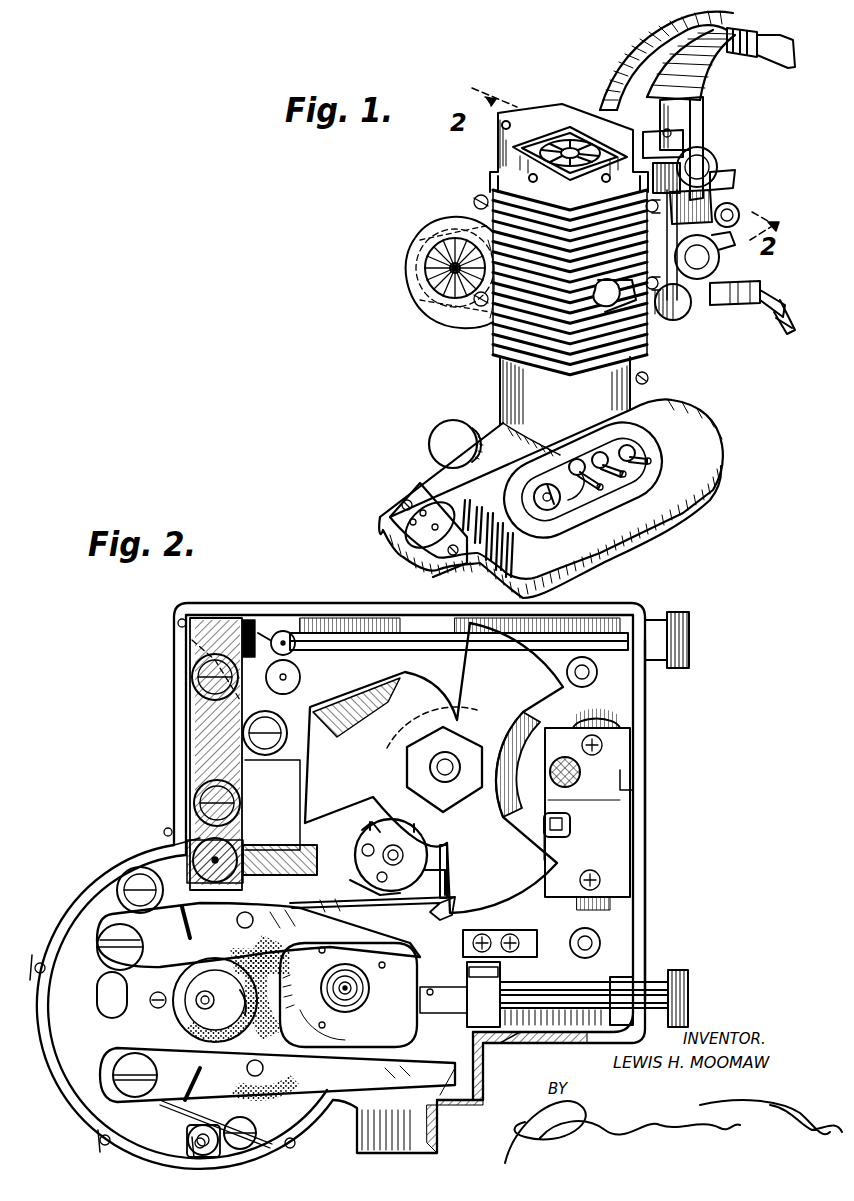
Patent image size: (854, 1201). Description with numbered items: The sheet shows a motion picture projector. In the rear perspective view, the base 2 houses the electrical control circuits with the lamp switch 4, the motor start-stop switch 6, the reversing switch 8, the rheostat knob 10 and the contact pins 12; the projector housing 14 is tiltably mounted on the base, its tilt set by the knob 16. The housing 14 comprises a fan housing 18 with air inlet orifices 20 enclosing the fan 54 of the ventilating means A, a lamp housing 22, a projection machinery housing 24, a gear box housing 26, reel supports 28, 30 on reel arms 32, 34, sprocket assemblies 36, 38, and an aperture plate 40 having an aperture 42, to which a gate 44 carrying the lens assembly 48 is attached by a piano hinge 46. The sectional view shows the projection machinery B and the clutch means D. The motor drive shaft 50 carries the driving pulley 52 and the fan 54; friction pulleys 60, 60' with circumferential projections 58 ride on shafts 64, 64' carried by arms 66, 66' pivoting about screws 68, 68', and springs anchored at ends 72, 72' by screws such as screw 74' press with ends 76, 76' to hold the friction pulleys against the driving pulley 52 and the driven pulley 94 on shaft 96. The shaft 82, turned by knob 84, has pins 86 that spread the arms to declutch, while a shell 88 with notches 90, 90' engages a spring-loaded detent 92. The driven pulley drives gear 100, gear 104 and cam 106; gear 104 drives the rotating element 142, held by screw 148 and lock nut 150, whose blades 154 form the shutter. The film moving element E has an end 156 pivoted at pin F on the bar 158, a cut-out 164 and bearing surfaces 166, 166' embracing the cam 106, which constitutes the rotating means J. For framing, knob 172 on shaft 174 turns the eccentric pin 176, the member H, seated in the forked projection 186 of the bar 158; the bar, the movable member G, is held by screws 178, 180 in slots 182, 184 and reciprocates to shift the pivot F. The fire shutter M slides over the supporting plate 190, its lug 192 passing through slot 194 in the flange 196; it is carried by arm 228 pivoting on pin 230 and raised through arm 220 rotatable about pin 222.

In FIG. 1, the base 2 is at (690, 487).
In FIG. 1, the switch 4 is at (626, 476).
In FIG. 1, the switch 6 is at (601, 490).
In FIG. 1, the switch 8 is at (651, 461).
In FIG. 1, the knob 10 is at (583, 510).
In FIG. 1, the contact pins 12 is at (436, 528).
In FIG. 1, the projector housing 14 is at (480, 176).
In FIG. 1, the knob 16 is at (429, 445).
In FIG. 1, the fan housing 18 is at (420, 278).
In FIG. 1, the air inlet orifices 20 is at (462, 292).
In FIG. 1, the lamp housing 22 is at (632, 335).
In FIG. 1, the projection machinery housing 24 is at (545, 120).
In FIG. 2, the projection machinery housing 24 is at (638, 716).
In FIG. 1, the gear box housing 26 is at (695, 115).
In FIG. 1, the reel support 28 is at (750, 312).
In FIG. 1, the reel support 30 is at (763, 43).
In FIG. 1, the reel arm 32 is at (702, 308).
In FIG. 1, the reel arm 34 is at (705, 54).
In FIG. 1, the sprocket assembly 36 is at (707, 153).
In FIG. 1, the sprocket assembly 38 is at (719, 258).
In FIG. 2, the aperture plate 40 is at (560, 838).
In FIG. 2, the aperture 42 is at (560, 823).
In FIG. 1, the gate 44 is at (657, 130).
In FIG. 1, the piano hinge 46 is at (672, 213).
In FIG. 1, the lens assembly 48 is at (715, 197).
In FIG. 2, the drive shaft 50 is at (217, 1004).
In FIG. 2, the driving pulley 52 is at (177, 1000).
In FIG. 1, the ventilating fan 54 is at (440, 225).
In FIG. 2, the circumferential projections 58 is at (255, 1000).
In FIG. 2, the friction pulley 60 is at (258, 932).
In FIG. 2, the friction pulley 60' is at (277, 1075).
In FIG. 2, the shaft 64 is at (262, 922).
In FIG. 2, the shaft 64' is at (273, 1067).
In FIG. 2, the arm 66 is at (306, 987).
In FIG. 2, the arm 66' is at (332, 1027).
In FIG. 2, the screw 68 is at (105, 944).
In FIG. 2, the screw 68' is at (120, 1066).
In FIG. 2, the spring end 72 is at (123, 893).
In FIG. 2, the spring end 72' is at (210, 1129).
In FIG. 2, the screw 74' is at (259, 1143).
In FIG. 2, the spring end 76 is at (173, 931).
In FIG. 2, the spring end 76' is at (182, 1078).
In FIG. 2, the shaft 82 is at (557, 993).
In FIG. 1, the actuating knob 84 is at (668, 316).
In FIG. 2, the actuating knob 84 is at (692, 997).
In FIG. 2, the radially projecting pin 86 is at (432, 992).
In FIG. 2, the shell 88 is at (512, 1032).
In FIG. 2, the notch 90 is at (462, 989).
In FIG. 2, the notch 90' is at (453, 1072).
In FIG. 2, the spring-loaded detent 92 is at (500, 971).
In FIG. 2, the driven pulley 94 is at (410, 1022).
In FIG. 2, the shaft 96 is at (352, 989).
In FIG. 2, the gear 100 is at (425, 915).
In FIG. 2, the gear 104 is at (430, 851).
In FIG. 2, the cam 106 is at (384, 838).
In FIG. 2, the rotating element 142 is at (497, 798).
In FIG. 2, the screw 148 is at (452, 757).
In FIG. 2, the lock nut 150 is at (467, 767).
In FIG. 2, the blades 154 is at (513, 655).
In FIG. 2, the end 156 is at (280, 860).
In FIG. 2, the bar 158 is at (207, 762).
In FIG. 2, the cut-out 164 is at (364, 887).
In FIG. 2, the bearing surface 166 is at (371, 804).
In FIG. 2, the bearing surface 166' is at (457, 883).
In FIG. 1, the knob 172 is at (708, 171).
In FIG. 2, the knob 172 is at (685, 640).
In FIG. 2, the shaft 174 is at (445, 641).
In FIG. 2, the pin 176 is at (263, 637).
In FIG. 2, the screw 178 is at (198, 677).
In FIG. 2, the screw 180 is at (194, 803).
In FIG. 2, the elongated slot 182 is at (190, 646).
In FIG. 2, the elongated slot 184 is at (271, 805).
In FIG. 2, the forked projection 186 is at (246, 625).
In FIG. 2, the supporting plate 190 is at (552, 888).
In FIG. 2, the projecting lug 192 is at (584, 797).
In FIG. 2, the slot 194 is at (612, 778).
In FIG. 2, the upturned flange 196 is at (610, 727).
In FIG. 2, the arm 220 is at (163, 863).
In FIG. 2, the pin 222 is at (130, 883).
In FIG. 2, the arm 228 is at (353, 707).
In FIG. 2, the pin 230 is at (265, 723).
In FIG. 1, the ventilating means A is at (428, 308).
In FIG. 2, the projection machinery B is at (158, 787).
In FIG. 2, the clutch means D is at (355, 1072).
In FIG. 2, the film moving element E is at (340, 827).
In FIG. 2, the pivot F is at (216, 858).
In FIG. 2, the movable member G is at (207, 732).
In FIG. 2, the continuously rotatable member H is at (262, 633).
In FIG. 2, the rotating means J is at (407, 850).
In FIG. 2, the fire shutter M is at (566, 757).